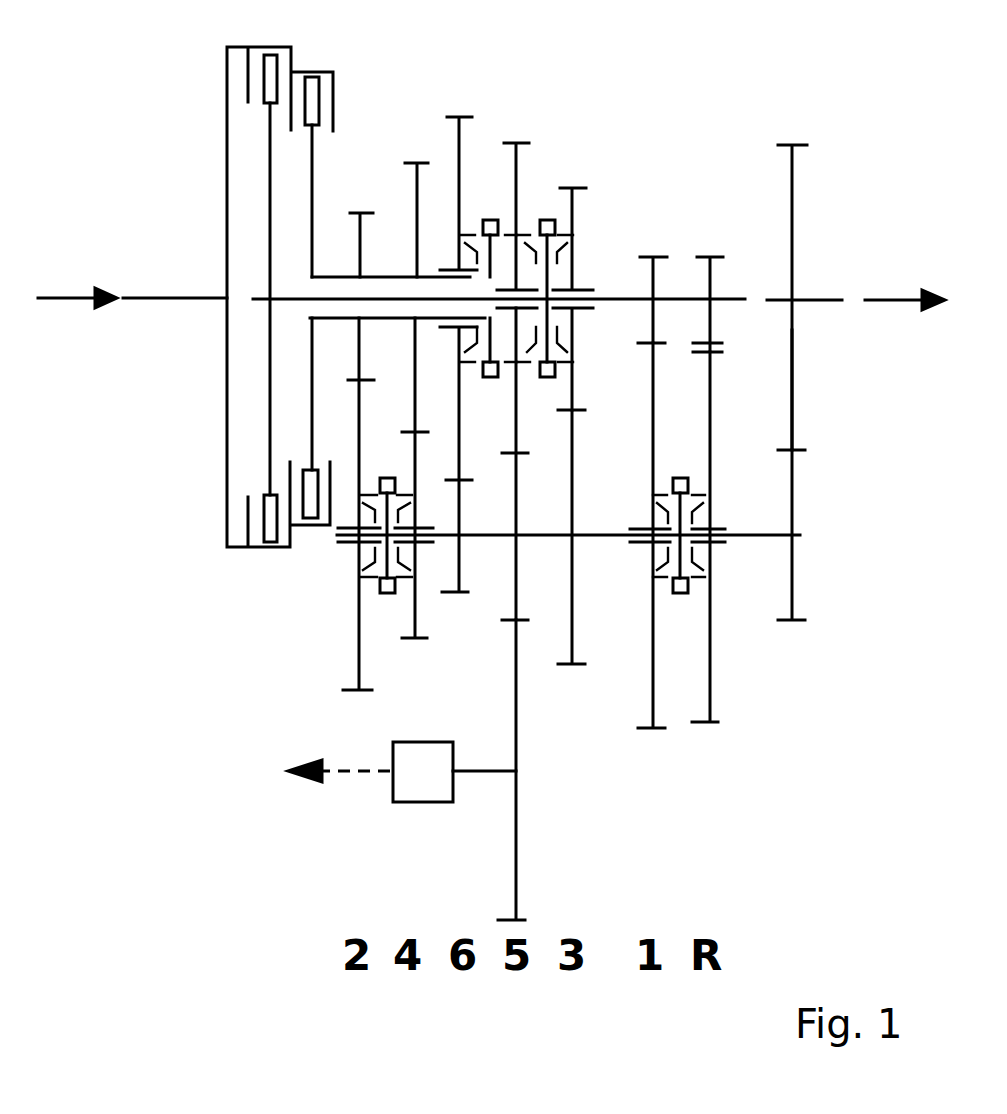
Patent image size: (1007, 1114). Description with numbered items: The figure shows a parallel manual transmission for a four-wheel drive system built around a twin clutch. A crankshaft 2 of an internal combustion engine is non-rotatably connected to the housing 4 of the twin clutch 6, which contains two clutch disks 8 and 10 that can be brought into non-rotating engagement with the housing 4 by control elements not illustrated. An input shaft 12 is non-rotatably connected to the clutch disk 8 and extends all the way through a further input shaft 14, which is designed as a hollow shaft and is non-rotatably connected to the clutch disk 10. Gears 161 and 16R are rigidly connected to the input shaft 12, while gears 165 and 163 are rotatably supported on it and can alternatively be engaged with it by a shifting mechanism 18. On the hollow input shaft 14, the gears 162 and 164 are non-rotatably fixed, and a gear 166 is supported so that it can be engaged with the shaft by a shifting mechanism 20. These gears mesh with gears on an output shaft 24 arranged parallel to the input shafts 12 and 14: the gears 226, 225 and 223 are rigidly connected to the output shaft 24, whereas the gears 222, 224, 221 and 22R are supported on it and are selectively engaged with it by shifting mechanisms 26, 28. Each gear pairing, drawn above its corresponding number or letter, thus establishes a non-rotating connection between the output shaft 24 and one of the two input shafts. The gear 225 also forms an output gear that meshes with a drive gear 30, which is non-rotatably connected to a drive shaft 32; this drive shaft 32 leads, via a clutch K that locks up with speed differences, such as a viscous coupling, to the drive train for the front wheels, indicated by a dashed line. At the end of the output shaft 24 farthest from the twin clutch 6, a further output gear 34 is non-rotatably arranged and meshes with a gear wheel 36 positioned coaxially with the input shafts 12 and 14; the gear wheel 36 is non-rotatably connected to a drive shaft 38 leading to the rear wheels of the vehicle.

The crankshaft 2 is at (170, 302).
The housing 4 is at (223, 485).
The twin clutch 6 is at (245, 574).
The clutch disk 8 is at (270, 195).
The clutch disk 10 is at (311, 155).
The input shaft 12 is at (608, 297).
The input shaft 14 is at (337, 275).
The gear 162 is at (363, 247).
The gear 164 is at (422, 198).
The gear 166 is at (460, 135).
The gear 165 is at (519, 163).
The gear 163 is at (577, 223).
The gear 161 is at (657, 273).
The gear 16R is at (712, 273).
The shifting mechanism 18 is at (547, 218).
The shifting mechanism 20 is at (490, 218).
The gear 222 is at (357, 655).
The gear 224 is at (415, 625).
The gear 226 is at (455, 572).
The gear 225 is at (517, 595).
The gear 223 is at (571, 642).
The gear 221 is at (655, 732).
The gear 22R is at (712, 722).
The output shaft 24 is at (750, 538).
The shifting mechanism 26 is at (387, 478).
The shifting mechanism 28 is at (678, 478).
The drive gear 30 is at (513, 850).
The drive shaft 32 is at (482, 773).
The output gear 34 is at (793, 497).
The gear wheel 36 is at (793, 380).
The drive shaft 38 is at (812, 297).